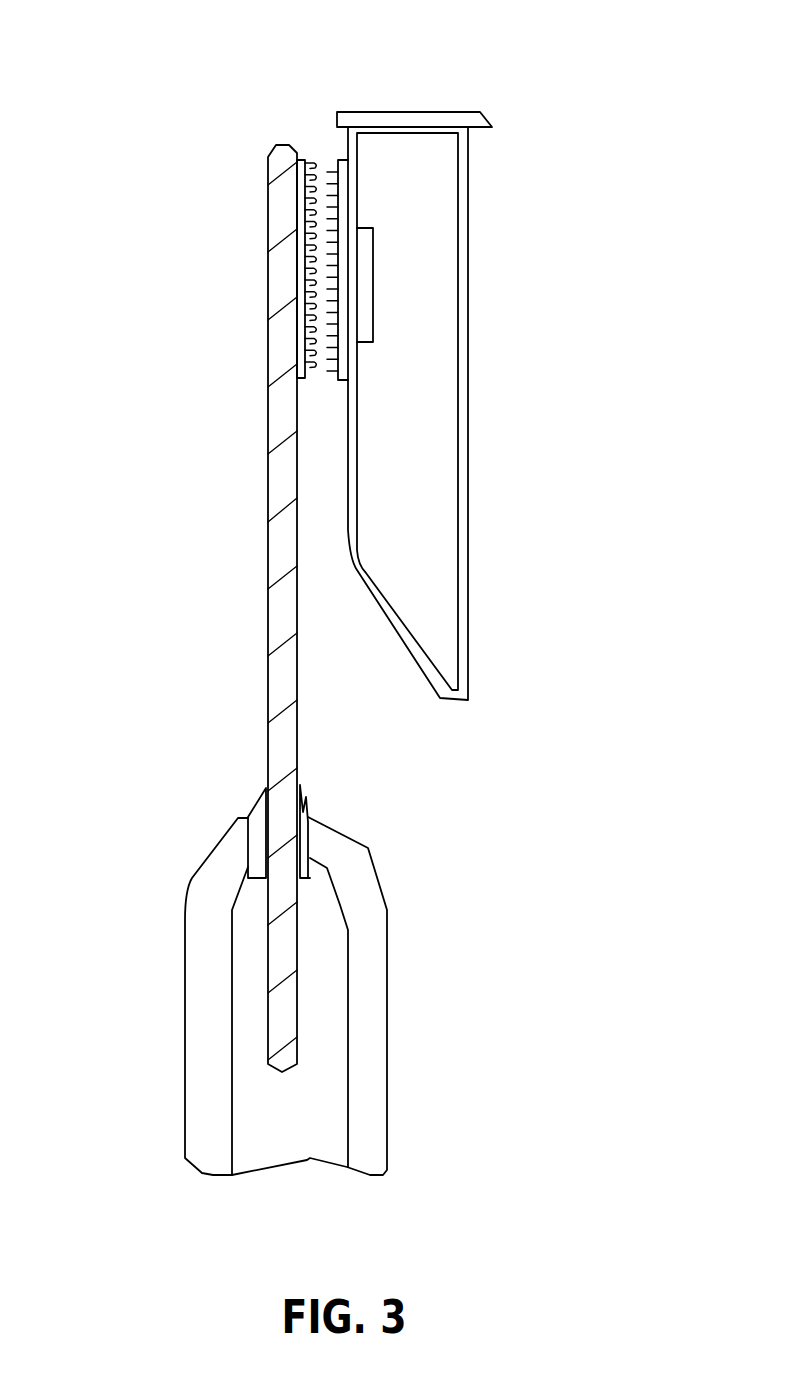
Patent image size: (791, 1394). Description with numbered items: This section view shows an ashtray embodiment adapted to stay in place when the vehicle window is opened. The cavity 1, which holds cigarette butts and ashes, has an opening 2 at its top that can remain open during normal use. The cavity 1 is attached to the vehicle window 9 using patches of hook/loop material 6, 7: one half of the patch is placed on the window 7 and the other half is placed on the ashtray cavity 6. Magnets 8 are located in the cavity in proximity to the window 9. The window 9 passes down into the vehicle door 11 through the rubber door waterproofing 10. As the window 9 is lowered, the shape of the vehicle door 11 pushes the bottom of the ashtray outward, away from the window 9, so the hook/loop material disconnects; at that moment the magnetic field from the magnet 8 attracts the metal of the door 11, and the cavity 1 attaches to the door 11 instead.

The cavity 1 is at (478, 320).
The opening 2 is at (427, 107).
The hook/loop material on cavity 6 is at (332, 387).
The hook/loop material on window 7 is at (307, 147).
The magnet 8 is at (378, 323).
The vehicle window 9 is at (258, 455).
The rubber door waterproofing 10 is at (248, 800).
The vehicle door 11 is at (175, 905).